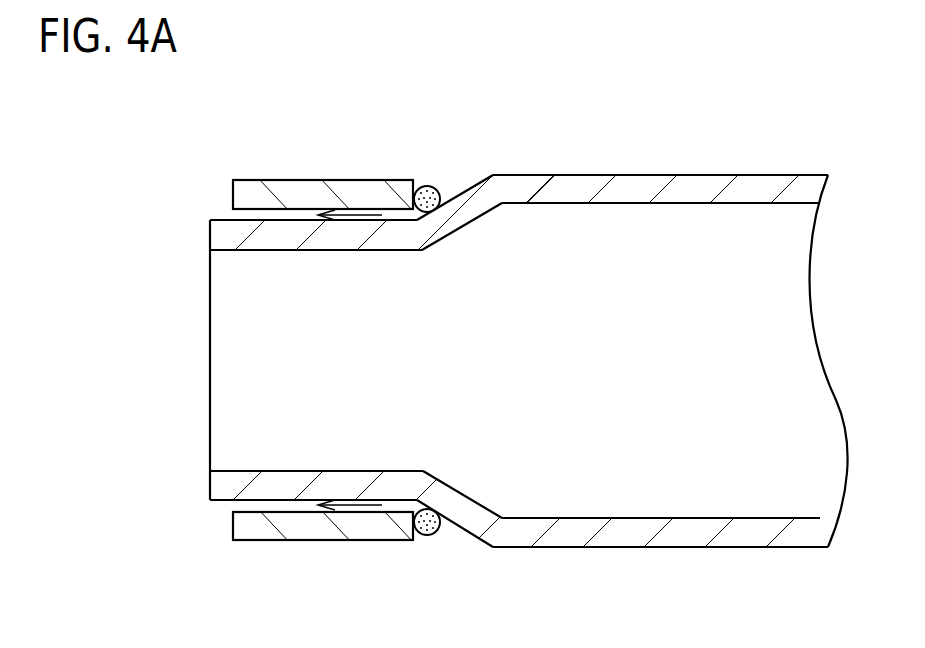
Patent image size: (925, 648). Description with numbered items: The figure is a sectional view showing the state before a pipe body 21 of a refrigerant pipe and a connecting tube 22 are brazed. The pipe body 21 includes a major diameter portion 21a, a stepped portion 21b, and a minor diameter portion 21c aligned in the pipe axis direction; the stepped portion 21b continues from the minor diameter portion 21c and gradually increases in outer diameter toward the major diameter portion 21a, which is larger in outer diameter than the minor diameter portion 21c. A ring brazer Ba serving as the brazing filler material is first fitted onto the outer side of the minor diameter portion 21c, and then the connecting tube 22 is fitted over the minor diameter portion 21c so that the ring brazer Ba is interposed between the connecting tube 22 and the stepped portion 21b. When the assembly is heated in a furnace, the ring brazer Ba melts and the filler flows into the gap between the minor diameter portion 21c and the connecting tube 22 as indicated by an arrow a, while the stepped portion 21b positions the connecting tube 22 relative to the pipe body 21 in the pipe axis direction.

The pipe body 21 is at (762, 172).
The major diameter portion 21a is at (649, 188).
The stepped portion 21b is at (458, 191).
The minor diameter portion 21c is at (263, 251).
The connecting tube 22 is at (305, 192).
The ring brazer Ba is at (426, 186).
The arrow a is at (360, 506).